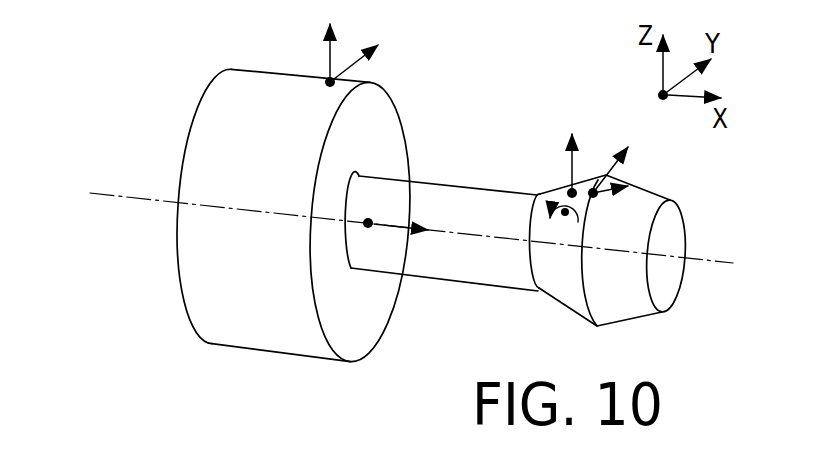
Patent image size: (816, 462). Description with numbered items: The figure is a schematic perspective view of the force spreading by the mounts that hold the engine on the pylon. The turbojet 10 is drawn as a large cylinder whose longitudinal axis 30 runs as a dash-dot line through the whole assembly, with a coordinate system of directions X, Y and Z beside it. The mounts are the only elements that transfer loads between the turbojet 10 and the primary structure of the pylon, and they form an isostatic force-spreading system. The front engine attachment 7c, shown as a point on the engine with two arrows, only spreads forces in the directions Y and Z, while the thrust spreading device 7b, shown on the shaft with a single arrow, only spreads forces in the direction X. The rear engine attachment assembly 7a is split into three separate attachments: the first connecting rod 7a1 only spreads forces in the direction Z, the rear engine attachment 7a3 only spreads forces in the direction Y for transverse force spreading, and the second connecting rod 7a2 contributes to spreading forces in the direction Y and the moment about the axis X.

The turbojet 10 is at (160, 308).
The axis of rotation 30 is at (717, 263).
The rear engine attachment assembly 7a is at (677, 207).
The first connecting rod 7a1 is at (567, 190).
The second connecting rod 7a2 is at (565, 216).
The rear engine attachment 7a3 is at (594, 197).
The thrust spreading device 7b is at (369, 228).
The front engine attachment 7c is at (325, 78).